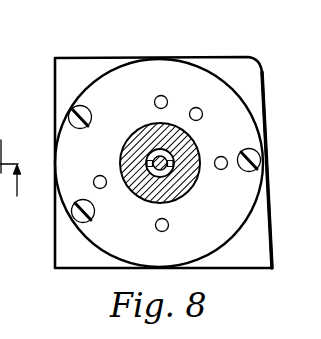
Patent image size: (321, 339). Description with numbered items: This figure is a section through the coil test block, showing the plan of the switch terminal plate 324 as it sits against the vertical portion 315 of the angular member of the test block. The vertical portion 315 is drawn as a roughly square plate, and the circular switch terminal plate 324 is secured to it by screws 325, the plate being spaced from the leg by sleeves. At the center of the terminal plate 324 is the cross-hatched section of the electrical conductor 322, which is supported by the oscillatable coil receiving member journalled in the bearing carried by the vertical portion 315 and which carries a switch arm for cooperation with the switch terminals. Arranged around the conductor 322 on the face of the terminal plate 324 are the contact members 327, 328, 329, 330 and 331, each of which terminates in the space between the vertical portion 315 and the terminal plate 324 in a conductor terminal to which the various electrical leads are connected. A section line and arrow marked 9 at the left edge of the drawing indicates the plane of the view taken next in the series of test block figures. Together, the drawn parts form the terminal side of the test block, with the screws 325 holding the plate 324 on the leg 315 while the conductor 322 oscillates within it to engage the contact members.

The section line indicator for FIG. 9 is at (12, 182).
The vertical portion 315 is at (59, 252).
The electrical conductor 322 is at (156, 152).
The switch terminal plate 324 is at (157, 59).
The screws 325 is at (73, 110).
The contact member 327 is at (164, 97).
The contact member 328 is at (209, 102).
The contact member 329 is at (221, 156).
The contact member 330 is at (169, 223).
The contact member 331 is at (101, 189).